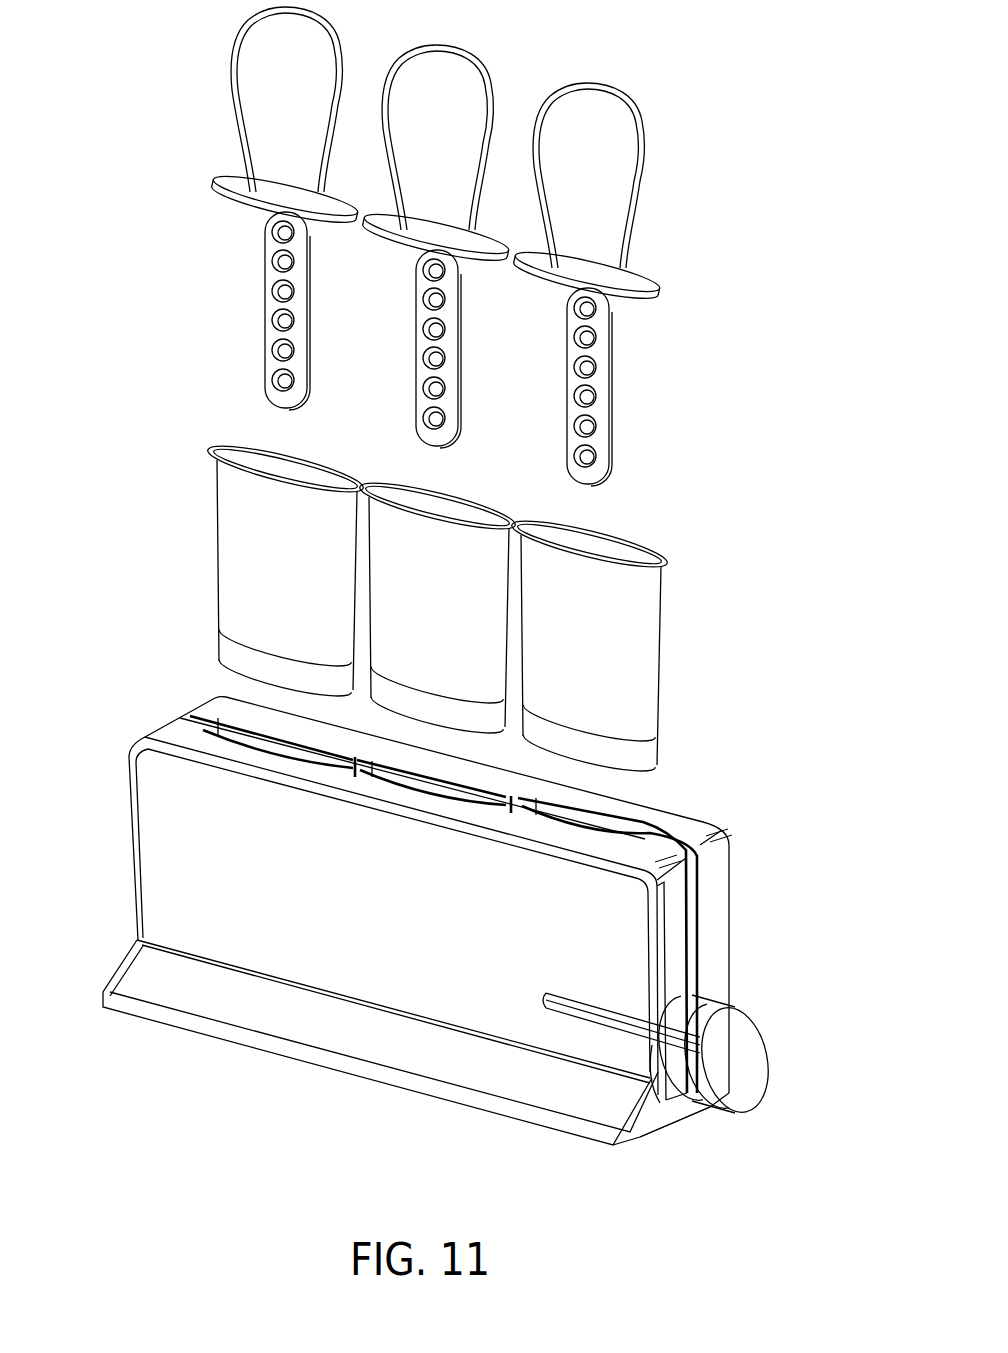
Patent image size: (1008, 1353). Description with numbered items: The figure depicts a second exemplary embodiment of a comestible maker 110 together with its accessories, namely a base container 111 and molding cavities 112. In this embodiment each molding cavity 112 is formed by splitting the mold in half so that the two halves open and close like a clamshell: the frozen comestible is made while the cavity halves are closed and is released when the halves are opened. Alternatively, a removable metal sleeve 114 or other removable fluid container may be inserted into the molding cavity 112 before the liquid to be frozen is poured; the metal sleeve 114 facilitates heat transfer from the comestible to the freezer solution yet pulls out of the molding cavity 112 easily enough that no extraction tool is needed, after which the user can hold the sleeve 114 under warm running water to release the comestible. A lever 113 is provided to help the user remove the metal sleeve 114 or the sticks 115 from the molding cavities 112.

The comestible maker 110 is at (125, 128).
The base container 111 is at (185, 990).
The molding cavity 112 is at (557, 818).
The lever 113 is at (755, 1027).
The metal sleeve 114 is at (678, 660).
The sticks 115 is at (668, 259).